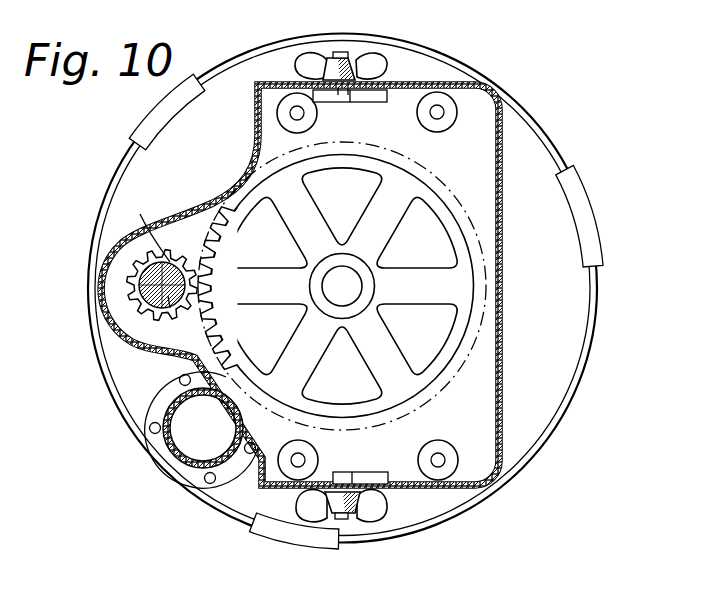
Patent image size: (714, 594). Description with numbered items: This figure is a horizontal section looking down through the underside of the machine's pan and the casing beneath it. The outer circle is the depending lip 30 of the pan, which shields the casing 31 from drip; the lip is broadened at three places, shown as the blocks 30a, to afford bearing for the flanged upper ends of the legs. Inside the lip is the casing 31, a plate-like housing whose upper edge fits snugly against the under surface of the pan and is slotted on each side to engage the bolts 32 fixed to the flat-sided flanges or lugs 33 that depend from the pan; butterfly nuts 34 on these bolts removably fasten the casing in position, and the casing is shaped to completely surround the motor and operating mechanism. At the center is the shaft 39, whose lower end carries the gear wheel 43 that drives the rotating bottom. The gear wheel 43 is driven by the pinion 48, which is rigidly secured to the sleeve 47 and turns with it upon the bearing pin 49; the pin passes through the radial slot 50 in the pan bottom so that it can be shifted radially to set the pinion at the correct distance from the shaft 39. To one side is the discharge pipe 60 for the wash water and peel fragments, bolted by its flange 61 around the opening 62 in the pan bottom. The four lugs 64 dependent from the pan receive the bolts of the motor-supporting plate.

The depending lip 30 is at (562, 140).
The broadened portion of lip 30a is at (160, 113).
The casing 31 is at (505, 328).
The bolt 32 is at (347, 52).
The flanges or lugs 33 is at (370, 100).
The butterfly nuts 34 is at (380, 63).
The shaft 39 is at (342, 286).
The gear wheel 43 is at (342, 286).
The sleeve 47 is at (144, 303).
The pinion 48 is at (168, 261).
The bearing pin 49 is at (170, 308).
The radial slot 50 is at (147, 229).
The discharge pipe 60 is at (203, 428).
The flange 61 is at (230, 473).
The opening 62 is at (203, 428).
The lugs 64 is at (280, 118).